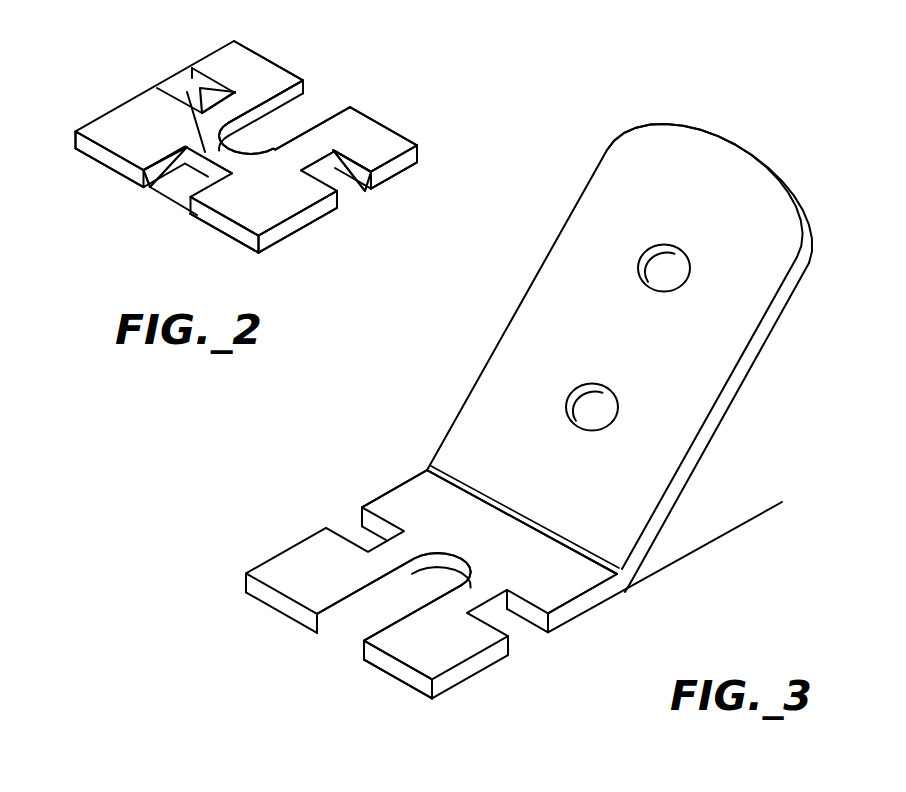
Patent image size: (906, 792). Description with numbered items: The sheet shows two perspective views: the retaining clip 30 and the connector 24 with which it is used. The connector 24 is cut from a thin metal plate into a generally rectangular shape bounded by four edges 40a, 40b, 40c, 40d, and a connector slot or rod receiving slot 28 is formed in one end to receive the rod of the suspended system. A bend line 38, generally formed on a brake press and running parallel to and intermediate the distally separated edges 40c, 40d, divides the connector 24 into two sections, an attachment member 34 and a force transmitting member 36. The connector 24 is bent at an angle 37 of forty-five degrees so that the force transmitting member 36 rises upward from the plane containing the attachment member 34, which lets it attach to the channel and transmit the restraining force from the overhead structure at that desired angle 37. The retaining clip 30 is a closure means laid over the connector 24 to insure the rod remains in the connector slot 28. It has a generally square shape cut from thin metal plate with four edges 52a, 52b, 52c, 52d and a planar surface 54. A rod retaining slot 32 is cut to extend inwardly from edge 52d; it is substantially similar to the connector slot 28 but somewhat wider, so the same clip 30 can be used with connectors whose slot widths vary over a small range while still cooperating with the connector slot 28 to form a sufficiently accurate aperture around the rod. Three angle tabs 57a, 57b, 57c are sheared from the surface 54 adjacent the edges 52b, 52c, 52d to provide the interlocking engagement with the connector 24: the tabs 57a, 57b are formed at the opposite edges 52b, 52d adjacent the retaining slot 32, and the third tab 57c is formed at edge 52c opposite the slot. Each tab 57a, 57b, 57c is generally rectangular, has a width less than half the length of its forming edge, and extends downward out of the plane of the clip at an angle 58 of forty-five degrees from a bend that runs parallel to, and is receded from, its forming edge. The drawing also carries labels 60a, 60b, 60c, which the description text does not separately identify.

In FIG. 3, the connector 24 is at (756, 450).
In FIG. 3, the connector slot 28 is at (345, 630).
In FIG. 2, the retaining clip 30 is at (408, 85).
In FIG. 2, the rod retaining slot 32 is at (300, 117).
In FIG. 3, the attachment member 34 is at (551, 590).
In FIG. 3, the force transmitting member 36 is at (705, 376).
In FIG. 3, the angle 37 is at (725, 533).
In FIG. 3, the bend line 38 is at (540, 526).
In FIG. 3, the edge 40a is at (423, 467).
In FIG. 3, the edge 40b is at (640, 577).
In FIG. 3, the edge 40c is at (400, 678).
In FIG. 3, the edge 40d is at (707, 133).
In FIG. 2, the edge 52a is at (100, 116).
In FIG. 2, the edge 52b is at (278, 240).
In FIG. 2, the edge 52c is at (225, 232).
In FIG. 2, the edge 52d is at (392, 126).
In FIG. 2, the planar surface 54 is at (264, 205).
In FIG. 2, the angle tab 57a is at (187, 90).
In FIG. 2, the angle tab 57b is at (345, 198).
In FIG. 2, the angle tab 57c is at (160, 207).
In FIG. 2, the angle 58 is at (145, 183).
In FIG. 2, the tab 60a is at (243, 93).
In FIG. 2, the tab 60b is at (320, 153).
In FIG. 2, the tab 60c is at (185, 95).